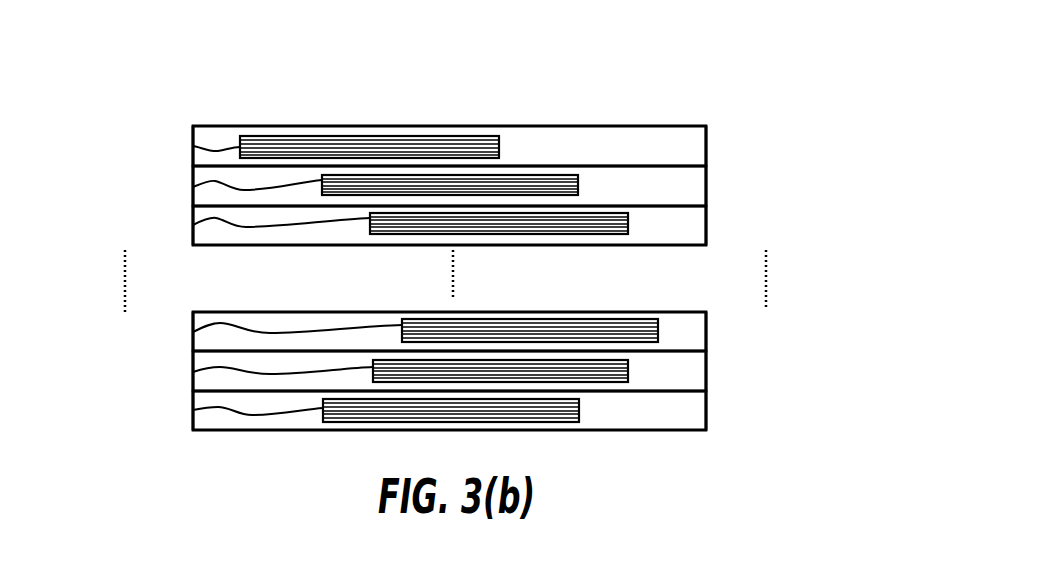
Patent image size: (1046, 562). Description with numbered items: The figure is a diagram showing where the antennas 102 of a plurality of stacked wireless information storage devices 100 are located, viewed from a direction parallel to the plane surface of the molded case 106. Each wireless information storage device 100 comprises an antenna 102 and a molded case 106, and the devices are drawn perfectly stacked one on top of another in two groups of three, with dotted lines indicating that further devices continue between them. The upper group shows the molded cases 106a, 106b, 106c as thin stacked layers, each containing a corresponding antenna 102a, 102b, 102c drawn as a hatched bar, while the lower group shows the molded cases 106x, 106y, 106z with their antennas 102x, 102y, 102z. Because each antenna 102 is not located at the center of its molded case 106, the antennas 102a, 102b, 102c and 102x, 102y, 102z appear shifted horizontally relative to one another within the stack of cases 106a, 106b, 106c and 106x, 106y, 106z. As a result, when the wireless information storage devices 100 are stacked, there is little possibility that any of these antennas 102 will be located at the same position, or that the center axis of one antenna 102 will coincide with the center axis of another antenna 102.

The wireless information storage device 100 is at (527, 124).
The antenna 102 is at (183, 139).
The molded case 106 is at (736, 142).
The antenna 102a is at (193, 146).
The antenna 102b is at (193, 186).
The antenna 102c is at (193, 224).
The antenna 102x is at (193, 331).
The antenna 102y is at (193, 372).
The antenna 102z is at (193, 409).
The molded case 106a is at (693, 155).
The molded case 106b is at (693, 193).
The molded case 106c is at (693, 232).
The molded case 106x is at (693, 332).
The molded case 106y is at (693, 371).
The molded case 106z is at (693, 410).